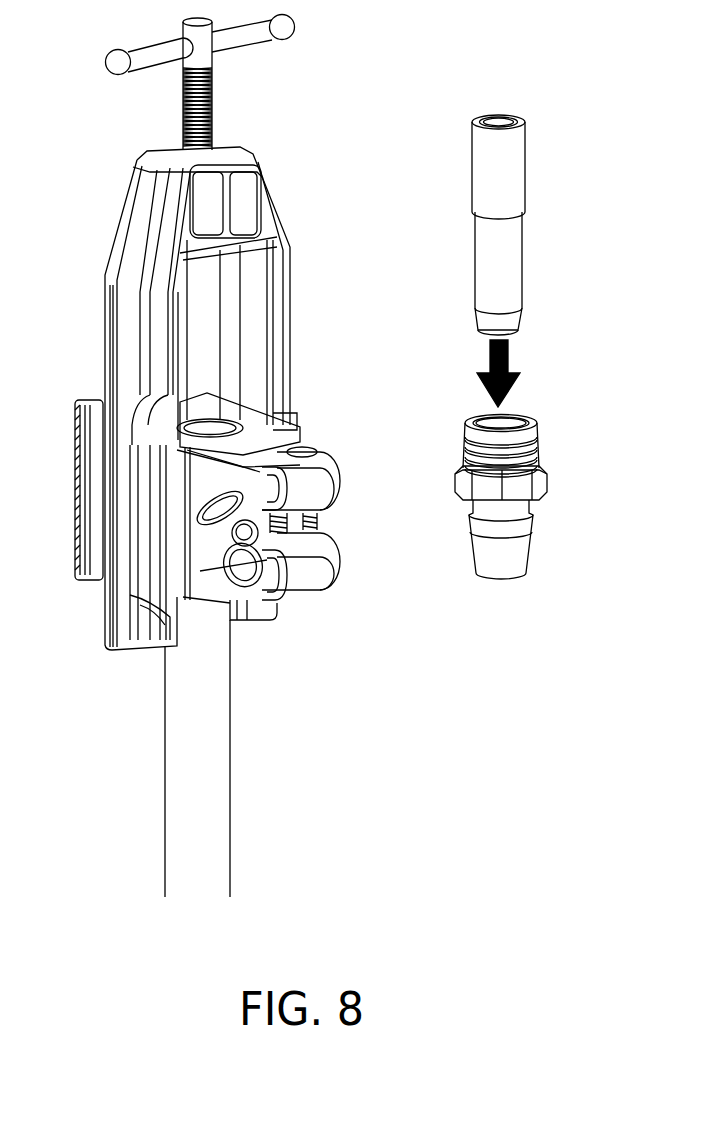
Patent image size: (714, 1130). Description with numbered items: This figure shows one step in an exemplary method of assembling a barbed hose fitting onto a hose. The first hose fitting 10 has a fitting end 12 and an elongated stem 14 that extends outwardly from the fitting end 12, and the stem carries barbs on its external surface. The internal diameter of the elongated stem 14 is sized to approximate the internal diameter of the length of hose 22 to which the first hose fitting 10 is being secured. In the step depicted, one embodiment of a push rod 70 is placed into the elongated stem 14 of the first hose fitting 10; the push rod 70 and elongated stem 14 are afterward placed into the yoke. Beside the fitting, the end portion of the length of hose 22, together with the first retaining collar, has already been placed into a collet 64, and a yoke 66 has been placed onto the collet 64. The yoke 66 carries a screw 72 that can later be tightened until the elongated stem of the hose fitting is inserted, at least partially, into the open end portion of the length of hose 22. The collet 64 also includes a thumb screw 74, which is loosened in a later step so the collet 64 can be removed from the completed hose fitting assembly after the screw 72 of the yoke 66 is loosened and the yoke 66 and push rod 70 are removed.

The first hose fitting 10 is at (508, 489).
The fitting end 12 is at (452, 428).
The elongated stem 14 is at (507, 560).
The length of hose 22 is at (182, 780).
The collet 64 is at (350, 461).
The yoke 66 is at (105, 233).
The push rod 70 is at (512, 252).
The screw 72 is at (117, 62).
The thumb screw 74 is at (240, 567).